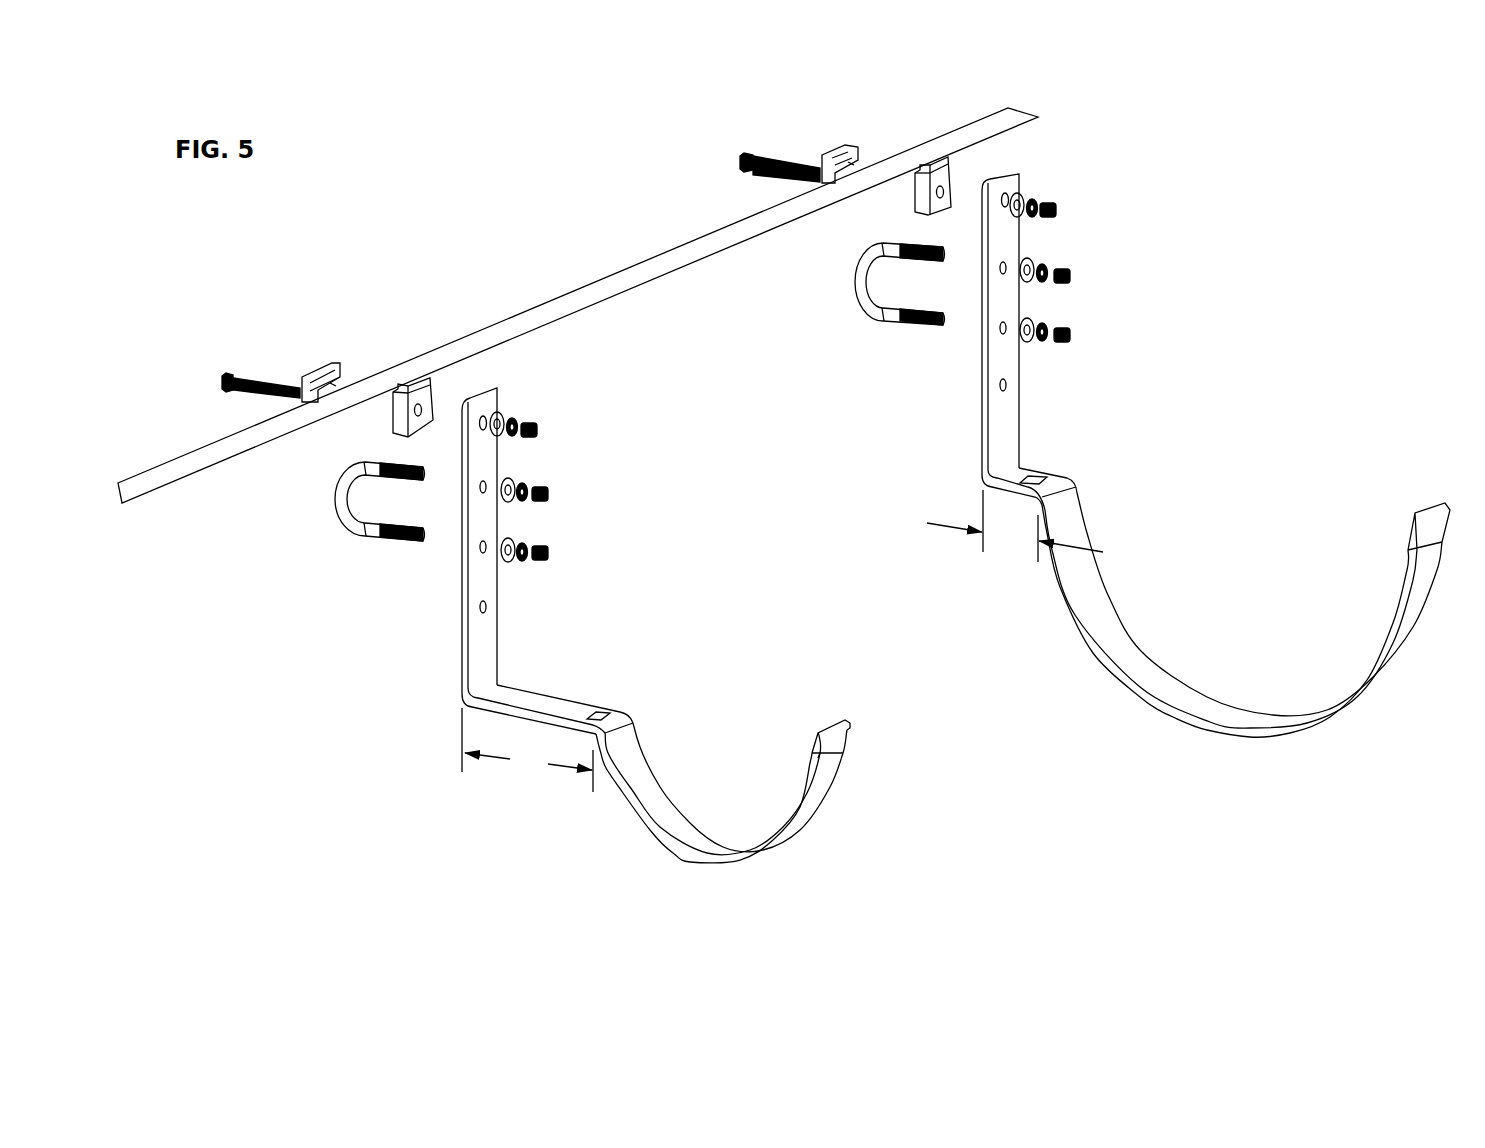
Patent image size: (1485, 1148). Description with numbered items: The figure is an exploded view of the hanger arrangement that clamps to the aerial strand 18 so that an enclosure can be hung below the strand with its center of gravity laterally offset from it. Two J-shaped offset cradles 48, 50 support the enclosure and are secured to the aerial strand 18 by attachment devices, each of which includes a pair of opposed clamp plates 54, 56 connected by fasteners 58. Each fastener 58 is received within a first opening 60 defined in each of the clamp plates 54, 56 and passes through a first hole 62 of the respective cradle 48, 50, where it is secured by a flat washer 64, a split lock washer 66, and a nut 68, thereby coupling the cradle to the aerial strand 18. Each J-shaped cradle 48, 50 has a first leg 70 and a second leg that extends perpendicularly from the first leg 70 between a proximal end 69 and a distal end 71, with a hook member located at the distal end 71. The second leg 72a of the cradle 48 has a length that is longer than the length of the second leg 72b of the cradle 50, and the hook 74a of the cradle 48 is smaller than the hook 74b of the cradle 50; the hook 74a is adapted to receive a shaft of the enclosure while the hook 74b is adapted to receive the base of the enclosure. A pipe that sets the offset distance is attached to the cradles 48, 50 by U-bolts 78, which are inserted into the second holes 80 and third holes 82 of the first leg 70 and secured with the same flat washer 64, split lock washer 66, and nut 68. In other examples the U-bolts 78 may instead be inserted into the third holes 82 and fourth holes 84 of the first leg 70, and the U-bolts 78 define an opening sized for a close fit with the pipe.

The aerial strand 18 is at (596, 281).
The J-shaped cradle 48 is at (606, 650).
The J-shaped cradle 50 is at (1189, 467).
The clamp plate 54 is at (433, 393).
The clamp plate 56 is at (322, 368).
The fastener 58 is at (226, 372).
The first opening 60 is at (333, 390).
The first hole 62 is at (487, 417).
The flat washer 64 is at (503, 432).
The split lock washer 66 is at (517, 420).
The nut 68 is at (539, 430).
The proximal end 69 is at (450, 703).
The first leg 70 is at (461, 600).
The distal end 71 is at (643, 718).
The second leg 72a is at (525, 692).
The second leg 72b is at (1045, 473).
The hook 74a is at (673, 860).
The hook 74b is at (1155, 708).
The U-bolt 78 is at (341, 502).
The second hole 80 is at (478, 484).
The third hole 82 is at (478, 551).
The fourth hole 84 is at (489, 606).